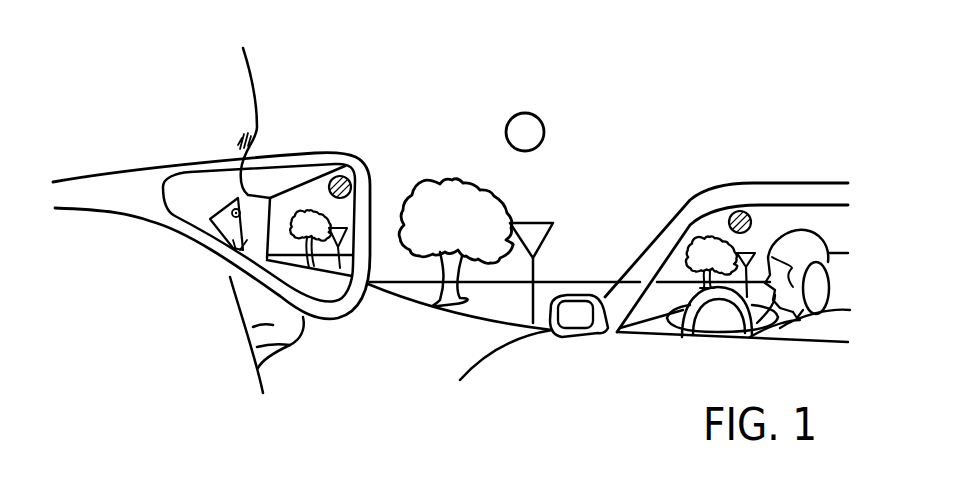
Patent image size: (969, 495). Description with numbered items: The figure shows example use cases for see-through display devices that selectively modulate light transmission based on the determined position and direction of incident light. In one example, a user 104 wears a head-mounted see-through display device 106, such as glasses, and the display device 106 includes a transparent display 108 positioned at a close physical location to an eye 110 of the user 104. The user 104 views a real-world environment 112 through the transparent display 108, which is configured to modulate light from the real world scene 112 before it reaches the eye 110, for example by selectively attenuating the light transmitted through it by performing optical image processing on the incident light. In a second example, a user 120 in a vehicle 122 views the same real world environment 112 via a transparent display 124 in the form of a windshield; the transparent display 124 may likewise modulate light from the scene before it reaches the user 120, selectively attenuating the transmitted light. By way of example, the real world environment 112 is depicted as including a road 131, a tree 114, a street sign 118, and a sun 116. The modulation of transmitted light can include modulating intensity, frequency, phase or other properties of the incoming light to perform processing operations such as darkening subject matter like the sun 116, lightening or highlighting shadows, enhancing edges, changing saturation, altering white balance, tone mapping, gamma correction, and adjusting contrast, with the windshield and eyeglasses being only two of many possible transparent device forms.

The user 104 is at (240, 90).
The head-mounted see-through display device 106 is at (137, 205).
The transparent display 108 is at (313, 192).
The eye 110 is at (225, 213).
The real-world environment 112 is at (462, 84).
The tree 114 is at (472, 183).
The sun 116 is at (545, 137).
The street sign 118 is at (540, 210).
The user 120 is at (808, 242).
The vehicle 122 is at (798, 195).
The transparent display 124 is at (717, 230).
The road 131 is at (458, 333).